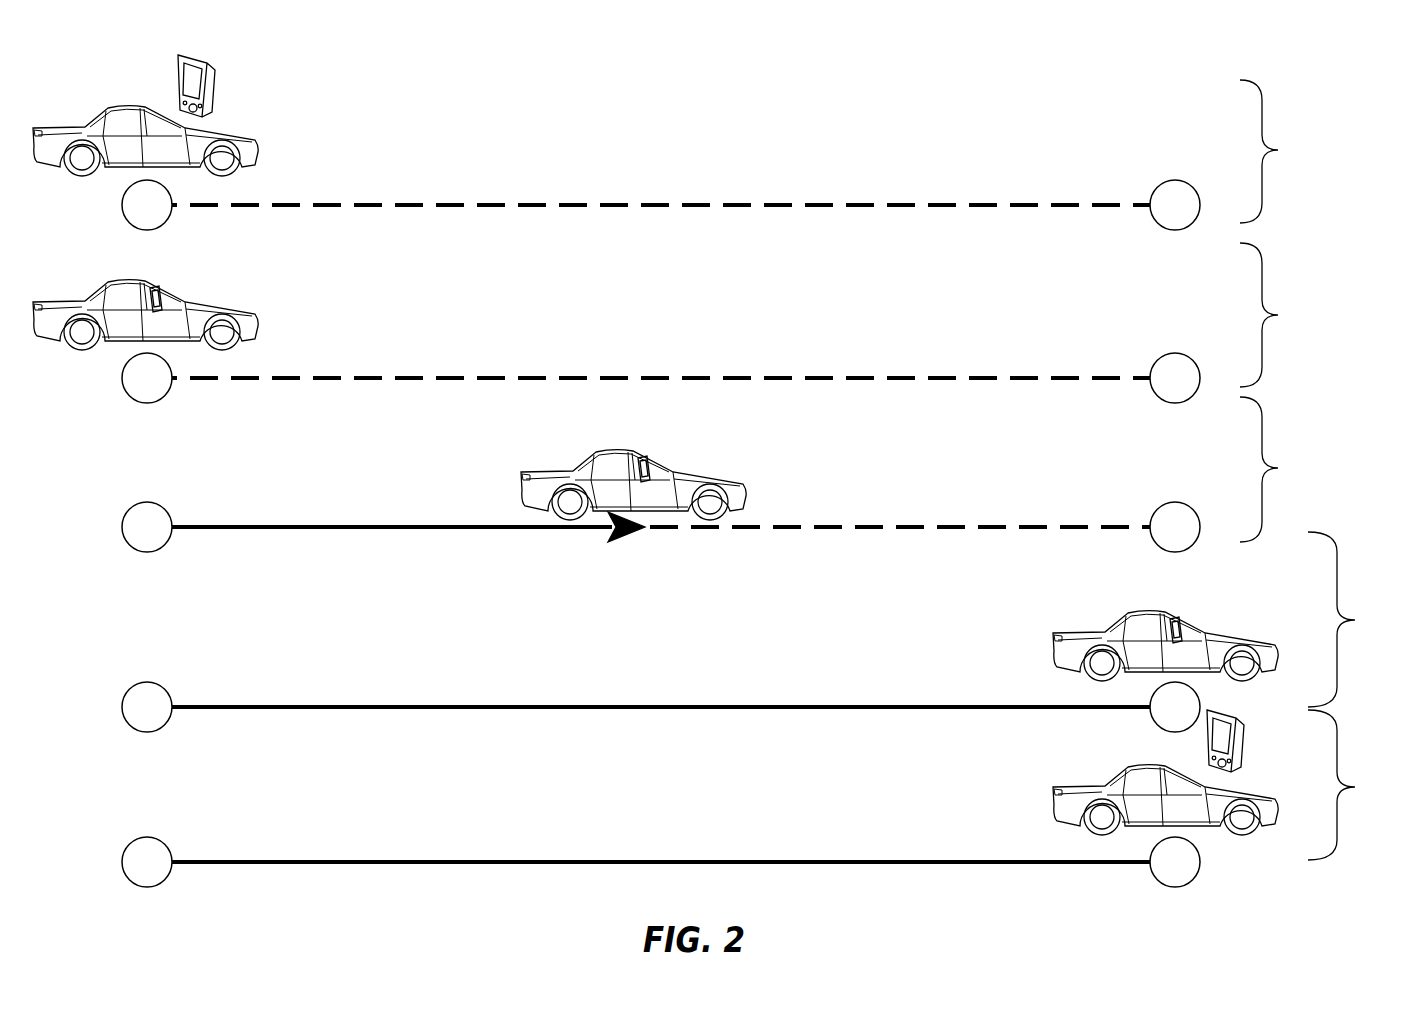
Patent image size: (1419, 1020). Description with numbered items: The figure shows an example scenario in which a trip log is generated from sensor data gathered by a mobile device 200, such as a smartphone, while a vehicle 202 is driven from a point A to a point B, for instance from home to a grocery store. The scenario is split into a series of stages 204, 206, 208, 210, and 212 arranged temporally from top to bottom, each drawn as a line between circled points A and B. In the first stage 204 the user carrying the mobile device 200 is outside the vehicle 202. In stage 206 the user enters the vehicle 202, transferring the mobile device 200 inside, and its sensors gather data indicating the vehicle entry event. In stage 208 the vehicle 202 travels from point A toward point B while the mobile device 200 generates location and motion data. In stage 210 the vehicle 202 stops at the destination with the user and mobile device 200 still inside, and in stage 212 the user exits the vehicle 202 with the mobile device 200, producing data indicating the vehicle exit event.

The mobile device 200 is at (215, 80).
The vehicle 202 is at (215, 128).
The stage 204 is at (729, 155).
The stage 206 is at (729, 323).
The stage 208 is at (729, 474).
The stage 210 is at (765, 632).
The stage 212 is at (765, 798).